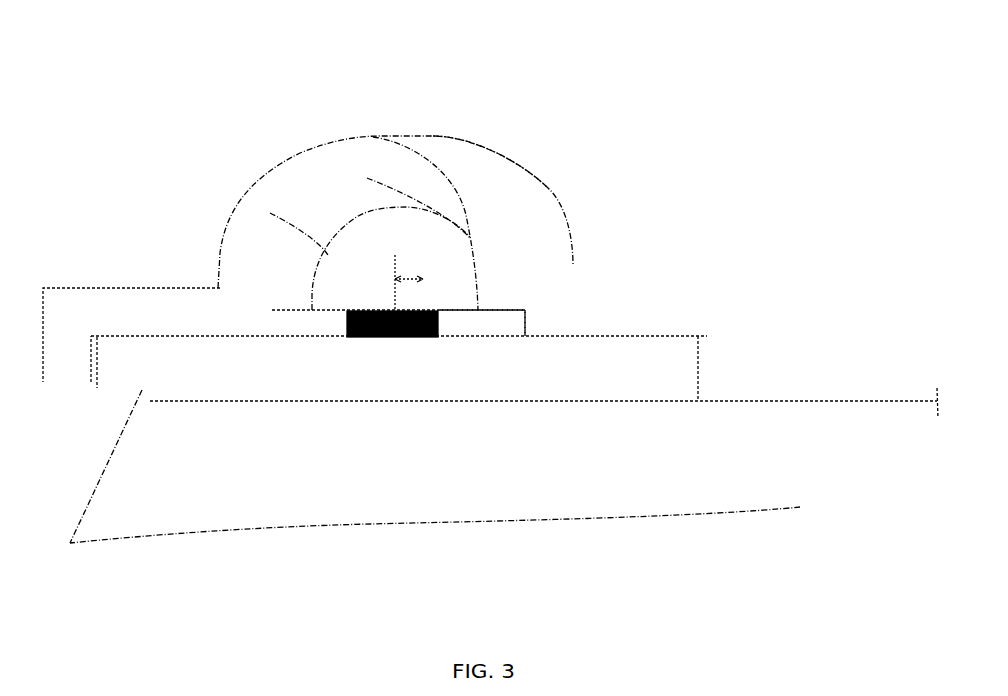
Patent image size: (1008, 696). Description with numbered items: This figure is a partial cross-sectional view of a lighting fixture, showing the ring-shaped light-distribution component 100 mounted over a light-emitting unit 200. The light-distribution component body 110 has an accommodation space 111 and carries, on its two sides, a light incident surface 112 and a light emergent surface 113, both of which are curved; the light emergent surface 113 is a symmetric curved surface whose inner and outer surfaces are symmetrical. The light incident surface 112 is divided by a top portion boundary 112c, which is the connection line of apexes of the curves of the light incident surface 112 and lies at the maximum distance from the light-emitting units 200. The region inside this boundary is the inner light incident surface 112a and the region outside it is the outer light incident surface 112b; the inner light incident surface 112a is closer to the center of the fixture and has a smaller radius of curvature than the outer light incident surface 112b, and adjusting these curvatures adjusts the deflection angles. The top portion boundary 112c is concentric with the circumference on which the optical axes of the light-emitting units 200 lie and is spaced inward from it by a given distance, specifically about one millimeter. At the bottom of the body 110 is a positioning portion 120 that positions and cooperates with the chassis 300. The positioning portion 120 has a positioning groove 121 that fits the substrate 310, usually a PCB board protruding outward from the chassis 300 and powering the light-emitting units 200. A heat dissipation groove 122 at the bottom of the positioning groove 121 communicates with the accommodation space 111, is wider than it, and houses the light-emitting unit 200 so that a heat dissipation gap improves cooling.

The light-distribution component 100 is at (582, 185).
The light-distribution component body 110 is at (423, 143).
The accommodation space 111 is at (459, 285).
The light incident surface 112 is at (260, 50).
The inner light incident surface 112a is at (373, 137).
The outer light incident surface 112b is at (270, 213).
The top portion boundary 112c is at (367, 178).
The light emergent surface 113 is at (485, 147).
The positioning portion 120 is at (642, 317).
The positioning groove 121 is at (700, 353).
The heat dissipation groove 122 is at (490, 325).
The light-emitting unit 200 is at (354, 338).
The chassis 300 is at (800, 417).
The substrate 310 is at (278, 355).